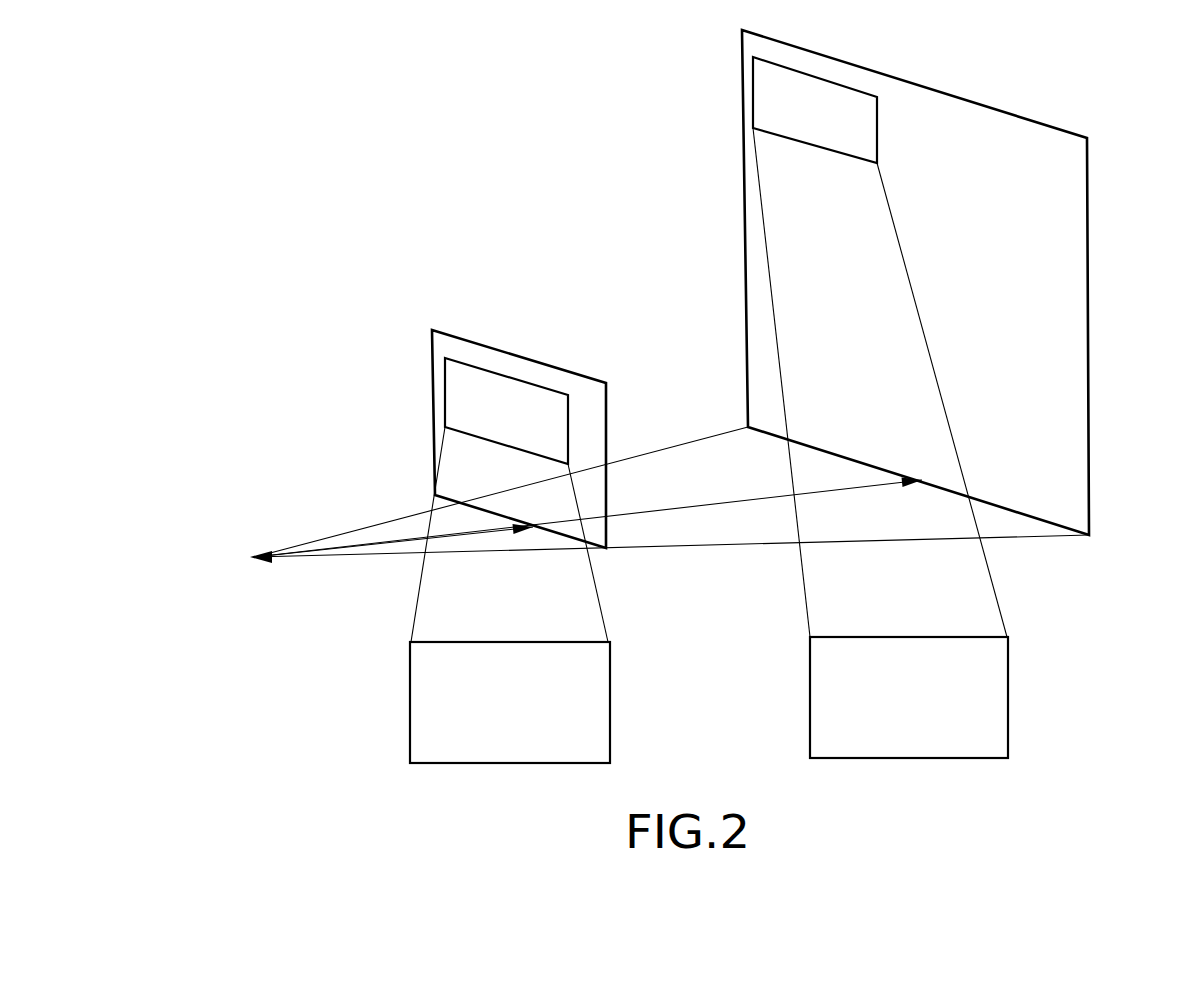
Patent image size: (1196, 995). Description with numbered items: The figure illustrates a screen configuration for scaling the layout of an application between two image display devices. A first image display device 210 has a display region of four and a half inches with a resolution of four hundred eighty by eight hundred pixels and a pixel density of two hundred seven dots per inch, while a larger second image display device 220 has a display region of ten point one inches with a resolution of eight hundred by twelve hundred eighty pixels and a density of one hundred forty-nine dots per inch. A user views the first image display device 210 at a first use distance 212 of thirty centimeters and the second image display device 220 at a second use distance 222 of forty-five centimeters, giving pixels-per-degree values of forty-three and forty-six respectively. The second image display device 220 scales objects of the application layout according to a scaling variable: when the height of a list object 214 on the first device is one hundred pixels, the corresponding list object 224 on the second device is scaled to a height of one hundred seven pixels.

The first image display device 210 is at (567, 486).
The first use distance 212 is at (393, 540).
The list object 214 is at (610, 703).
The second image display device 220 is at (964, 333).
The second use distance 222 is at (752, 500).
The list object 224 is at (1008, 697).